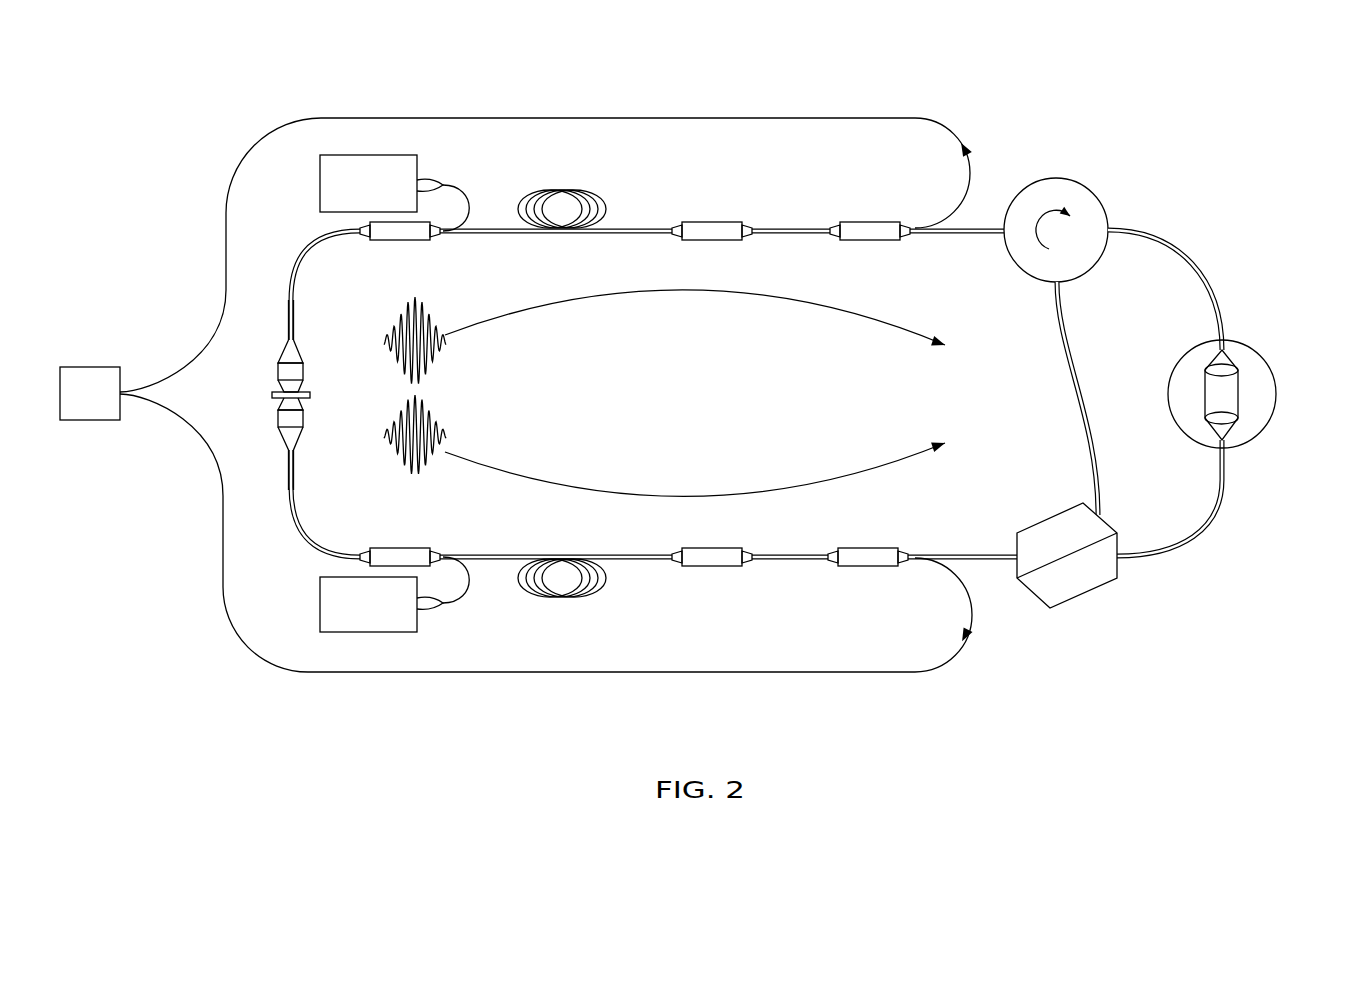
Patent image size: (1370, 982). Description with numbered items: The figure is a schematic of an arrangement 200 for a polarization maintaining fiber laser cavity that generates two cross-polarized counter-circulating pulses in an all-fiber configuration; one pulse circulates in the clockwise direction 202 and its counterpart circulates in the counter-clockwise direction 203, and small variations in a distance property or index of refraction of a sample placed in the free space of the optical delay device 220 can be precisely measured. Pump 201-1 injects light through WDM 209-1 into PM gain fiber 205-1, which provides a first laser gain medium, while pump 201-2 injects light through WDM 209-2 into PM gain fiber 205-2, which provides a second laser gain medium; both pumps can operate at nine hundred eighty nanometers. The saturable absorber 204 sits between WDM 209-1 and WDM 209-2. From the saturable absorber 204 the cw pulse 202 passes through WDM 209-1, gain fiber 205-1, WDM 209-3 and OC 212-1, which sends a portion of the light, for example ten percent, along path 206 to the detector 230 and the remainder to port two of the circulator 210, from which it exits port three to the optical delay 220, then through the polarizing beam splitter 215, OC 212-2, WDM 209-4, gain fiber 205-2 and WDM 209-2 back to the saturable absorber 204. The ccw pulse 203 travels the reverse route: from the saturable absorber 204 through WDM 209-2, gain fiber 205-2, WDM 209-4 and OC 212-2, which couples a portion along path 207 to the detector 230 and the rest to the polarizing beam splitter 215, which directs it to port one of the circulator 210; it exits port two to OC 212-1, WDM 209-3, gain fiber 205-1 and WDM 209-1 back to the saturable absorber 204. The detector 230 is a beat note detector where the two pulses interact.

The arrangement 200 is at (1215, 104).
The laser pump 201-1 is at (320, 178).
The laser pump 201-2 is at (320, 598).
The clockwise (cw) pulse 202 is at (813, 303).
The counter-clockwise (ccw) pulse 203 is at (813, 483).
The saturable absorber (SA) 204 is at (310, 395).
The PM gain fiber 205-1 is at (565, 191).
The PM gain fiber 205-2 is at (565, 597).
The path 206 is at (625, 118).
The path 207 is at (625, 672).
The WDM 209-1 is at (437, 241).
The WDM 209-2 is at (437, 547).
The WDM 209-3 is at (712, 221).
The WDM 209-4 is at (712, 567).
The circulator 210 is at (1099, 204).
The OC 212-1 is at (873, 222).
The OC 212-2 is at (868, 567).
The polarizing beam splitter (PBS) 215 is at (1085, 592).
The optical delay device 220 is at (1277, 394).
The detector DB 230 is at (88, 366).